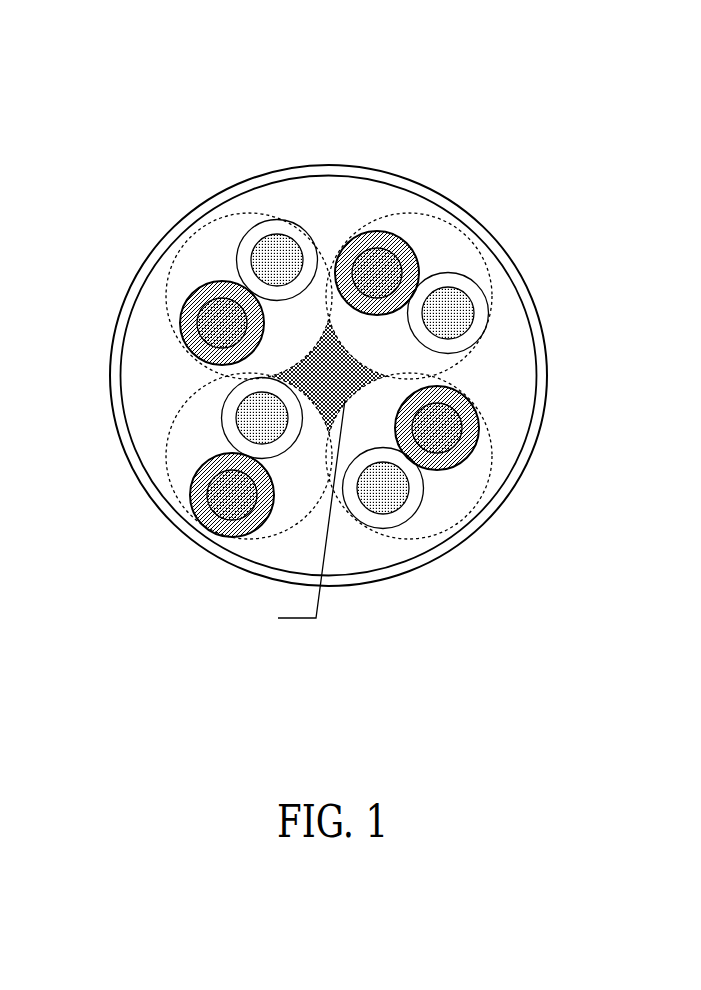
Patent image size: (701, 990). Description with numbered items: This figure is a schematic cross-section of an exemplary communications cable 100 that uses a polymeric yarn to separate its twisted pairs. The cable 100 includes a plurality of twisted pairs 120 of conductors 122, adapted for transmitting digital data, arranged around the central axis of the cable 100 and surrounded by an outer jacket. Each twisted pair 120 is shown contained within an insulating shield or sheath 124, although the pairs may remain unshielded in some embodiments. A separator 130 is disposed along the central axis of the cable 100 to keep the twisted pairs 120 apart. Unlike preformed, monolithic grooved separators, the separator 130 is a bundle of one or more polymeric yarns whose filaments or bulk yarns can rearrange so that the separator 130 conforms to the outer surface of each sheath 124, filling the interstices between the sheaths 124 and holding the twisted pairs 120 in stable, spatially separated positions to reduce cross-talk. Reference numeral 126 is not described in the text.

The cable 100 is at (136, 126).
The twisted pair 120 is at (418, 262).
The conductor 122 is at (181, 324).
The insulating shield or sheath 124 is at (172, 242).
The inner jacket layer 126 is at (116, 370).
The separator 130 is at (170, 398).